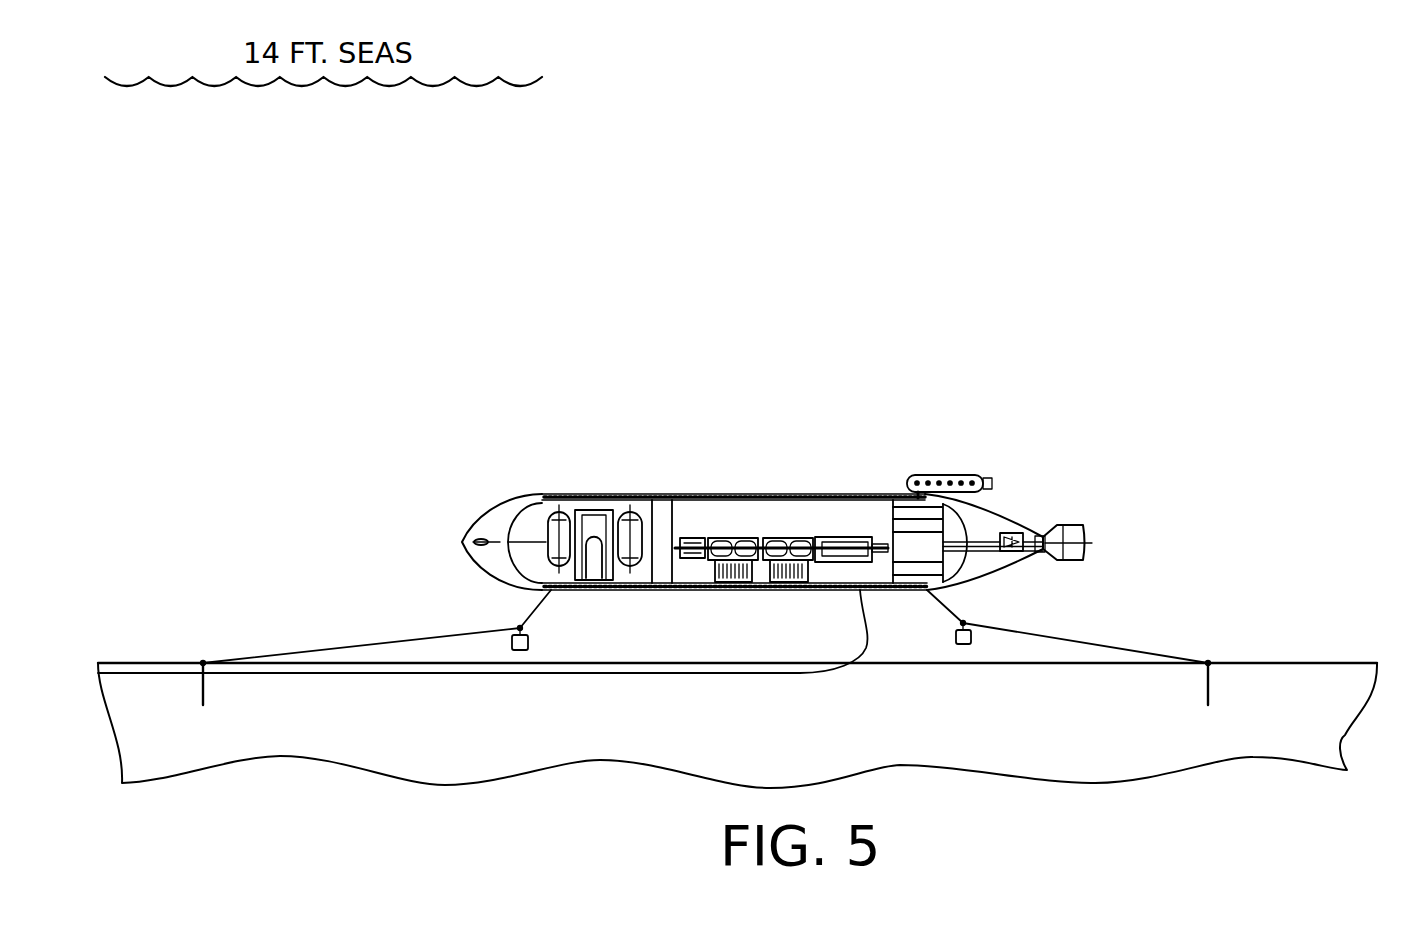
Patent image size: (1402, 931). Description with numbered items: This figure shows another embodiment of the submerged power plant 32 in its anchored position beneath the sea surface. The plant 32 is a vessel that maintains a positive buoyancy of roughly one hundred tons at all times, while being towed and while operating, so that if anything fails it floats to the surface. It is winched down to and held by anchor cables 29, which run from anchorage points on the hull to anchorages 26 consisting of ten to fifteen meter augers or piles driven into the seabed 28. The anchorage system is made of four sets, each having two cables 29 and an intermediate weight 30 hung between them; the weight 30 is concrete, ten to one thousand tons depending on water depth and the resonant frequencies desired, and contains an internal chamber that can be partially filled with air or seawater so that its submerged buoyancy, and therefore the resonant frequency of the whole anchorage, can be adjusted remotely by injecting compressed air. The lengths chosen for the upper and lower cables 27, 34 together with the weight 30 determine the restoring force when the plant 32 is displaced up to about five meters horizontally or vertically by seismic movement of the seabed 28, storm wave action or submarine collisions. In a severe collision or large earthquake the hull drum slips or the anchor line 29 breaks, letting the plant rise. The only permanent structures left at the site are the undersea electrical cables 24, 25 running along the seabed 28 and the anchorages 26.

The power transmission cable 24 is at (528, 662).
The undersea electrical cables 25 is at (866, 645).
The anchorages 26 is at (200, 690).
The upper cable 27 is at (947, 605).
The seabed 28 is at (578, 732).
The anchor cables 29 is at (530, 612).
The intermediate weight 30 is at (963, 644).
The power plant 32 is at (596, 512).
The lower cable 34 is at (1080, 641).